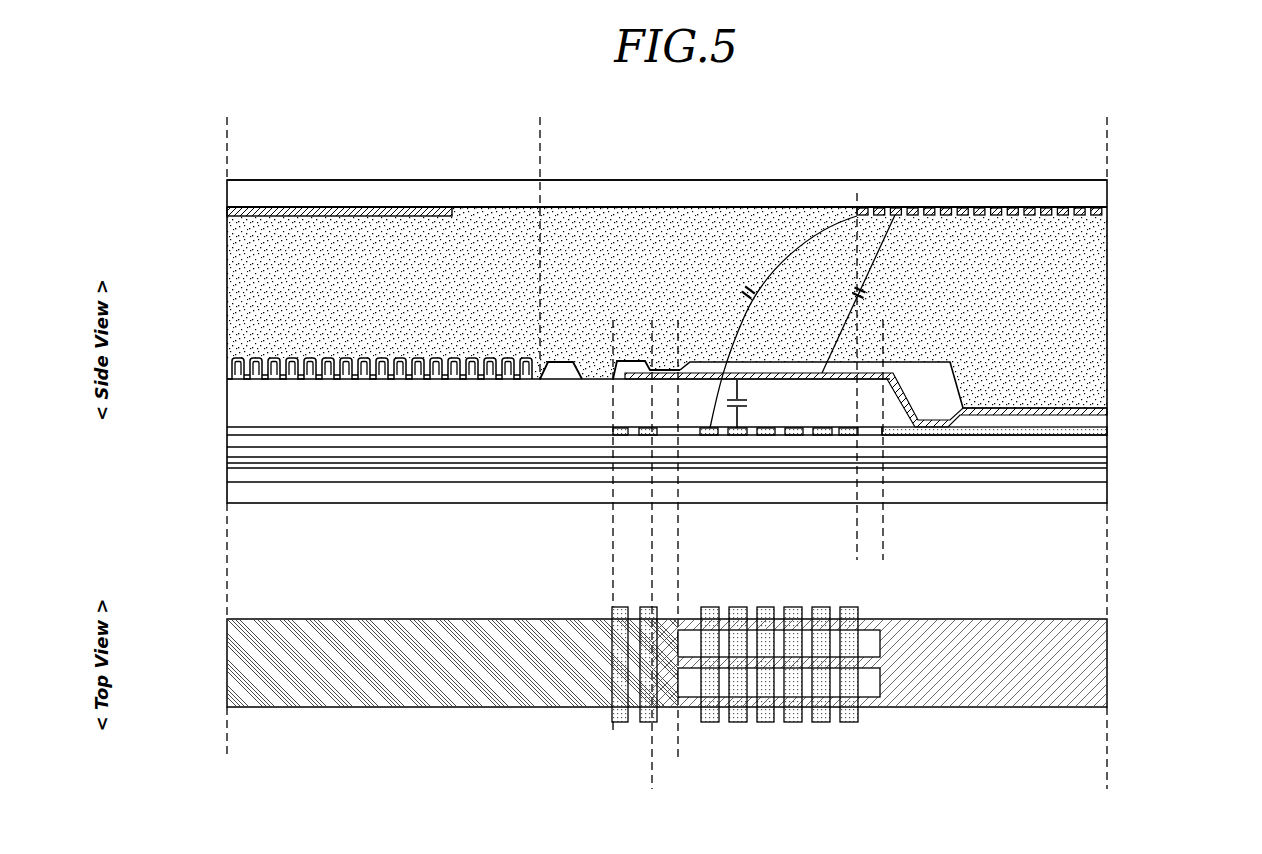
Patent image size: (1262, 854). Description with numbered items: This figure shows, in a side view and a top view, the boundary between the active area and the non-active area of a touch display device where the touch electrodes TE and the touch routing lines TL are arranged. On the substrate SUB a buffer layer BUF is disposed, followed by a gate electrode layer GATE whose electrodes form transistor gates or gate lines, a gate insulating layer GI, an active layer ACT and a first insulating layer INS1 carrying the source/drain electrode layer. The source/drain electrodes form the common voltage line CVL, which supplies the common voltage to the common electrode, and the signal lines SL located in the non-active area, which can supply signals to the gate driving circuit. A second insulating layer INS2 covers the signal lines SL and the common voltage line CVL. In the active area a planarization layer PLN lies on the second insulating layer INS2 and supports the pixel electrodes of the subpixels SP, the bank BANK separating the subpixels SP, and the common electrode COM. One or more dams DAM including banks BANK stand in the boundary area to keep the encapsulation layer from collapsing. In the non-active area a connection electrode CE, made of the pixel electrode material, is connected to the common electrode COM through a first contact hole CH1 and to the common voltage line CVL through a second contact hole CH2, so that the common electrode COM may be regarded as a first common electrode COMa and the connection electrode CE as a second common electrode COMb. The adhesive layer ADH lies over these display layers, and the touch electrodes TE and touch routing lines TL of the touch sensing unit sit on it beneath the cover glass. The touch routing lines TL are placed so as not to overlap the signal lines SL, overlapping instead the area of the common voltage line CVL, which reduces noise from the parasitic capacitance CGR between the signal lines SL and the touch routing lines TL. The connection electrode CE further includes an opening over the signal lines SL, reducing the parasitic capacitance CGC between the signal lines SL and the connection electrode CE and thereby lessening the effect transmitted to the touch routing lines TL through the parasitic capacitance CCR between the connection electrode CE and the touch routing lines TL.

The touch electrode TE is at (348, 207).
The touch routing line TL is at (1107, 213).
The adhesive layer ADH is at (1107, 270).
The subpixel SP is at (299, 350).
The common electrode COM is at (258, 358).
The dam DAM is at (631, 361).
The bank BANK is at (930, 368).
The first contact hole CH1 is at (666, 346).
The second contact hole CH2 is at (942, 401).
The connection electrode CE is at (1107, 411).
The second insulating layer INS2 is at (1107, 421).
The common voltage line CVL is at (1107, 431).
The first insulating layer INS1 is at (1107, 441).
The active layer ACT is at (1107, 452).
The gate insulating layer GI is at (1107, 460).
The gate electrode layer GATE is at (1107, 466).
The planarization layer PLN is at (227, 402).
The buffer layer BUF is at (227, 474).
The substrate SUB is at (227, 493).
The signal line SL is at (793, 436).
The parasitic capacitance between signal lines and touch routing lines CGR is at (783, 322).
The parasitic capacitance between connection electrode and touch routing lines CCR is at (861, 294).
The parasitic capacitance between signal lines and connection electrode CGC is at (755, 404).
The first common electrode COMa is at (676, 757).
The second common electrode COMb is at (1105, 789).